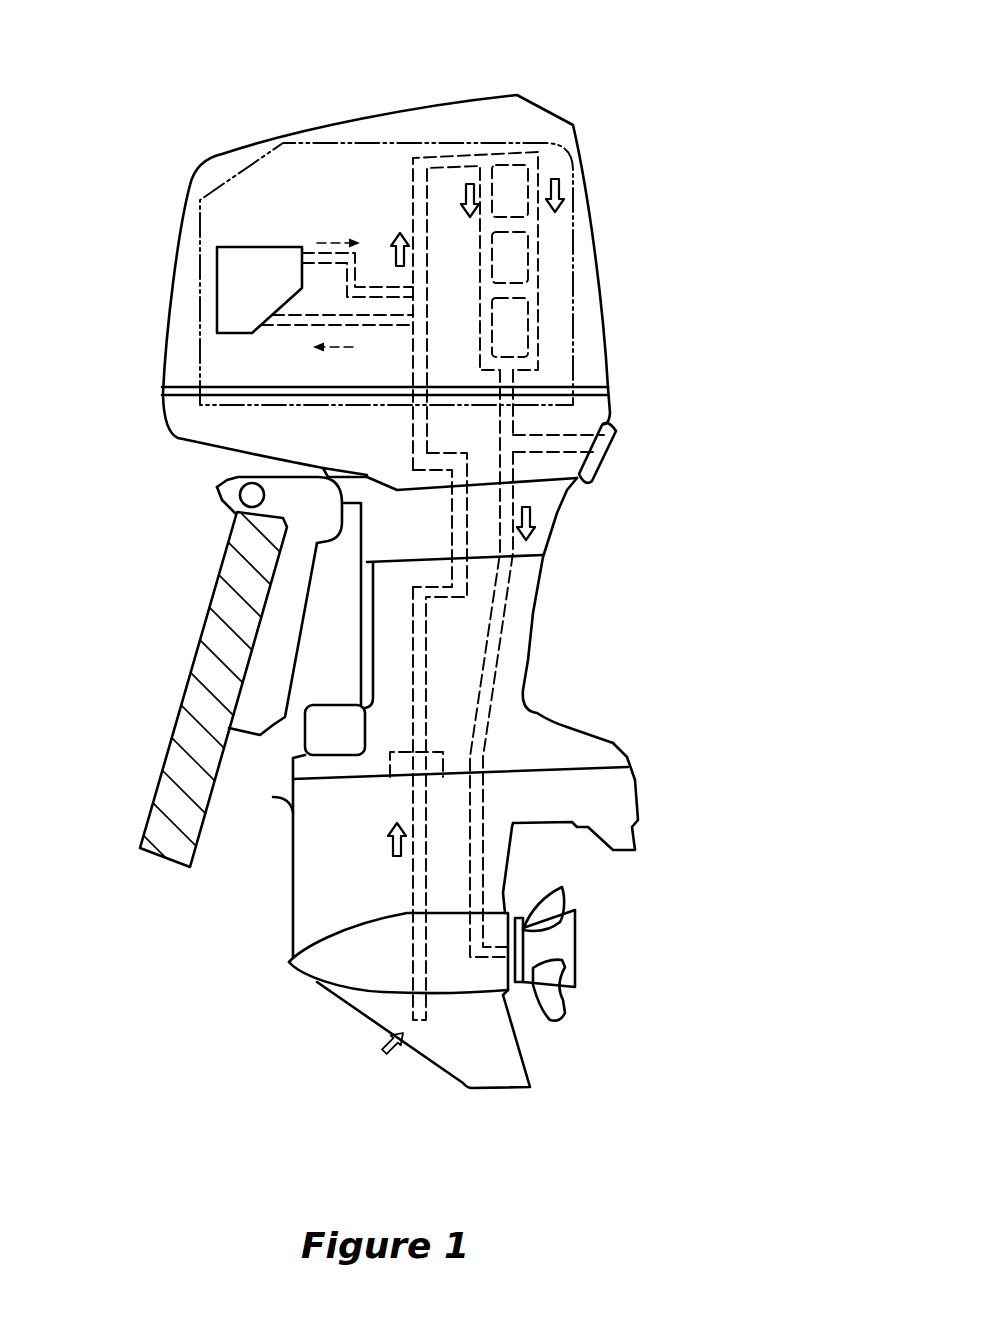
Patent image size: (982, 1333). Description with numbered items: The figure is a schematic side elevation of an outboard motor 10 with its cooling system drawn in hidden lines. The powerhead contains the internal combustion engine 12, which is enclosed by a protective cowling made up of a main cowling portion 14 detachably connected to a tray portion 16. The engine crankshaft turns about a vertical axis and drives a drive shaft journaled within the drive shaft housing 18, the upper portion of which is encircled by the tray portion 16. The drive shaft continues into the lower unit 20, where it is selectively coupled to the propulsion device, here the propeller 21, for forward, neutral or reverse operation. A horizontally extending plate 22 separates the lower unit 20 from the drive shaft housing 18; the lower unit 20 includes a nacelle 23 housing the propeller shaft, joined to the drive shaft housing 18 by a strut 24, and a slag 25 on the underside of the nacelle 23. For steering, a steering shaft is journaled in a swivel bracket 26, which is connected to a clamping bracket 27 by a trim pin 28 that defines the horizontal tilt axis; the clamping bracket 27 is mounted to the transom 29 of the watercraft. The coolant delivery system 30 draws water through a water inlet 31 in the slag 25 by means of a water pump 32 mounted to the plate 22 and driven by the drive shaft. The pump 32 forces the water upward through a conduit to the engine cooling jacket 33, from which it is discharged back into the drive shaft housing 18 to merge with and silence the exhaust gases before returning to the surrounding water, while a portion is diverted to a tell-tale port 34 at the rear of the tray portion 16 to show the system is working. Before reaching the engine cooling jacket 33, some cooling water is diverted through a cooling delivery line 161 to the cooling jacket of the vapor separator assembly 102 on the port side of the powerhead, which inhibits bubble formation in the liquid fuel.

The outboard motor 10 is at (610, 81).
The internal combustion engine 12 is at (578, 280).
The main cowling portion 14 is at (580, 163).
The tray portion 16 is at (607, 413).
The drive shaft housing 18 is at (533, 630).
The lower unit 20 is at (288, 877).
The propeller 21 is at (563, 997).
The horizontally extending plate 22 is at (620, 768).
The nacelle 23 is at (290, 967).
The strut 24 is at (508, 860).
The slag 25 is at (523, 1063).
The swivel bracket 26 is at (315, 690).
The clamping bracket 27 is at (251, 745).
The trim pin 28 is at (240, 493).
The transom 29 is at (158, 767).
The coolant delivery system 30 is at (429, 152).
The water inlet 31 is at (425, 1027).
The water pump 32 is at (448, 755).
The engine cooling jacket 33 is at (538, 243).
The tell-tale port 34 is at (612, 457).
The vapor separator assembly 102 is at (274, 243).
The cooling delivery line 161 is at (293, 323).